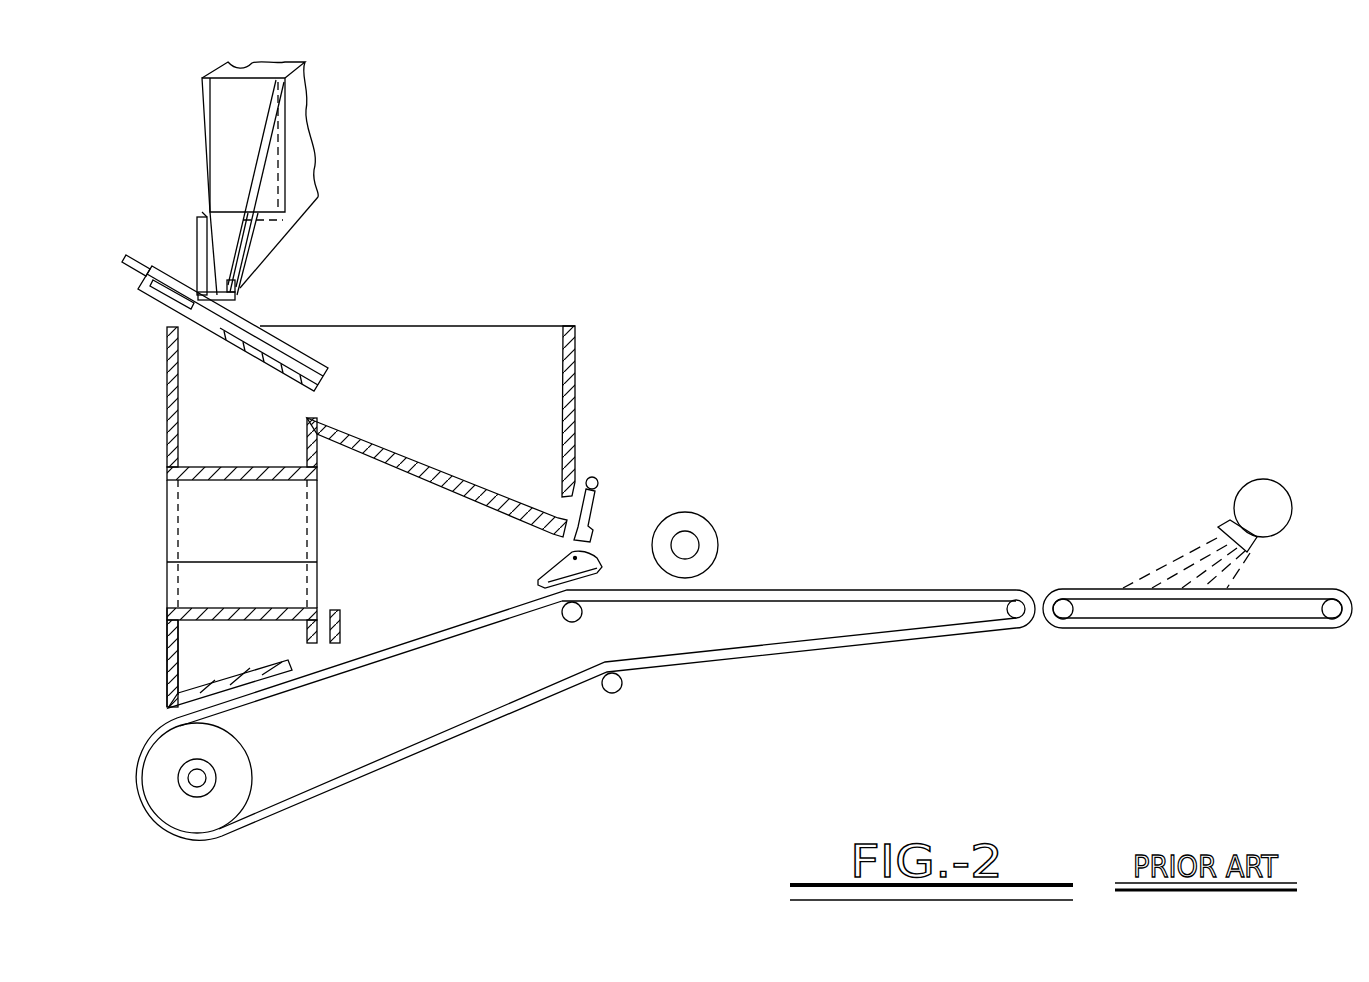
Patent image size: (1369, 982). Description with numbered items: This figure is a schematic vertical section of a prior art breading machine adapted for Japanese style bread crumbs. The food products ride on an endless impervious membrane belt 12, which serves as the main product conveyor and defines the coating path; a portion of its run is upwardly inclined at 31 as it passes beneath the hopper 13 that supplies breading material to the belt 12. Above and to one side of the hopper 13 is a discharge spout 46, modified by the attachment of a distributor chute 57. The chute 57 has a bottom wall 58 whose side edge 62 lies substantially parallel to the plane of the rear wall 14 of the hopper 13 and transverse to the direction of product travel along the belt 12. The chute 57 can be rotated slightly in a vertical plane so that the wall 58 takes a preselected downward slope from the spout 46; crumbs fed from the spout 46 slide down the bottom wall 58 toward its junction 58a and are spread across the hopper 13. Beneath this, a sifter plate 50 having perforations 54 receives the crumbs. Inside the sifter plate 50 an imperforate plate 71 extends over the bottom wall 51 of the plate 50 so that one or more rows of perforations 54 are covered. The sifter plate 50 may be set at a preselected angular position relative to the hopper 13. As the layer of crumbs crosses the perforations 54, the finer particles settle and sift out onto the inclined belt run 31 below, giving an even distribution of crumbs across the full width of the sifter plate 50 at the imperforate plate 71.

The endless impervious membrane belt 12 is at (475, 735).
The hopper 13 is at (586, 305).
The rear wall 14 is at (165, 463).
The upwardly inclined belt run 31 is at (447, 655).
The discharge spout 46 is at (298, 133).
The sifter plate 50 is at (158, 308).
The bottom wall 51 is at (300, 388).
The perforations 54 is at (247, 343).
The distributor chute 57 is at (262, 229).
The bottom wall 58 is at (228, 237).
The junction 58a is at (238, 300).
The side edge 62 is at (203, 270).
The imperforate plate 71 is at (168, 270).